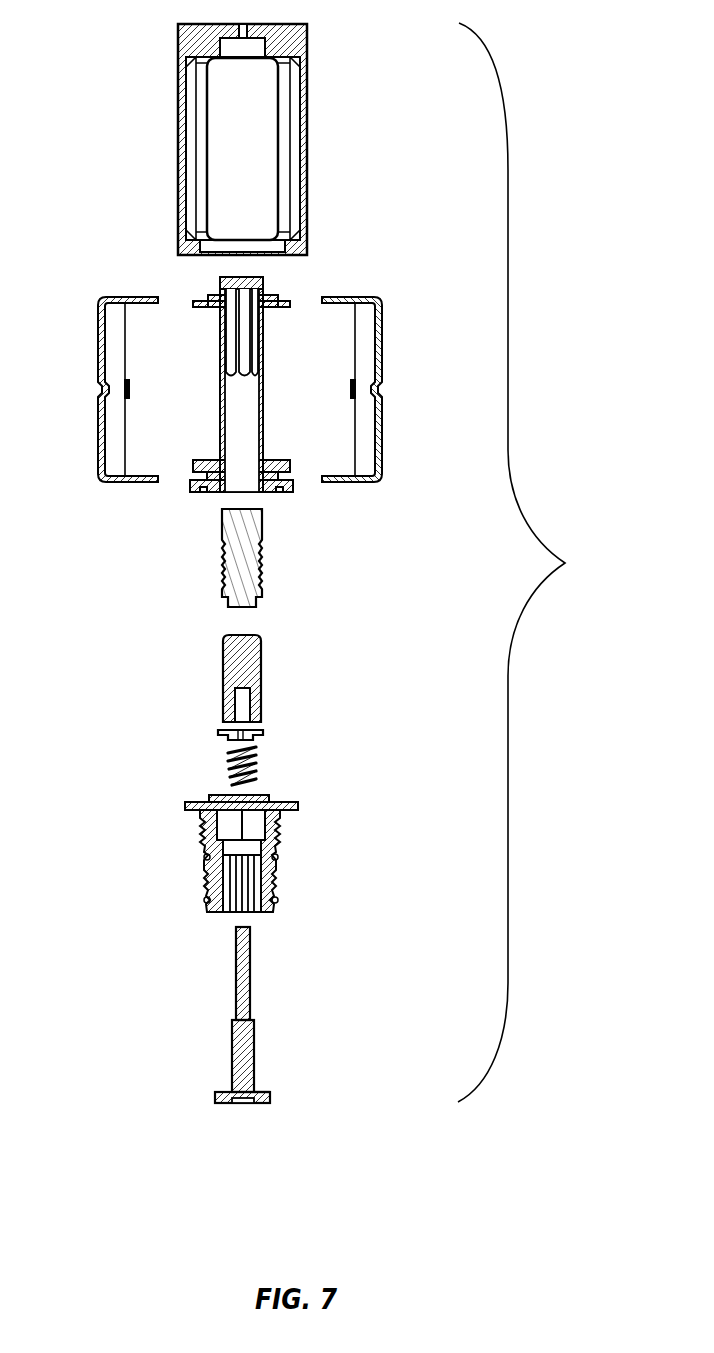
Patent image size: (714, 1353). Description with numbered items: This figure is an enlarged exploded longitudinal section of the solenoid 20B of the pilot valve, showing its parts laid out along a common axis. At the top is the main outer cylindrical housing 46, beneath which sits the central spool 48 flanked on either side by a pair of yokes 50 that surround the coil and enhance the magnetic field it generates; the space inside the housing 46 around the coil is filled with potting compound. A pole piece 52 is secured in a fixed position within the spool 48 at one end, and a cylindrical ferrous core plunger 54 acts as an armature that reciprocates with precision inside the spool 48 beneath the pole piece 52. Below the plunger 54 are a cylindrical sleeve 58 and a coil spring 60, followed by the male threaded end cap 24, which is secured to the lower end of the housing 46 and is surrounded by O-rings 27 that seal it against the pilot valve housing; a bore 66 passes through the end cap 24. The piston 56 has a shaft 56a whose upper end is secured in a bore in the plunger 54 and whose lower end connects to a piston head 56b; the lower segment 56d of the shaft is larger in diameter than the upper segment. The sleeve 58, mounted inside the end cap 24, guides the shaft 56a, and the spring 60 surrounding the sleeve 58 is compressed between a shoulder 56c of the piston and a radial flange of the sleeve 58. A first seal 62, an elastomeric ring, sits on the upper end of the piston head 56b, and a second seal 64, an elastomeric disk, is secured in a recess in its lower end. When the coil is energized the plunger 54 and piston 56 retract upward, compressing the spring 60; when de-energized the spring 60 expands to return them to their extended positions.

The solenoid 20B is at (539, 562).
The housing 46 is at (310, 147).
The spool 48 is at (265, 417).
The yokes 50 is at (98, 350).
The pole piece 52 is at (262, 563).
The plunger 54 is at (261, 672).
The sleeve 58 is at (268, 730).
The coil spring 60 is at (258, 768).
The end cap 24 is at (280, 830).
The O-rings 27 is at (279, 857).
The bore 66 is at (227, 913).
The piston 56 is at (252, 1040).
The piston shaft 56a is at (250, 945).
The piston head 56b is at (270, 1100).
The shoulder 56c is at (253, 1022).
The pin lower shaft 56d is at (232, 1062).
The first seal 62 is at (265, 1092).
The second seal 64 is at (243, 1104).